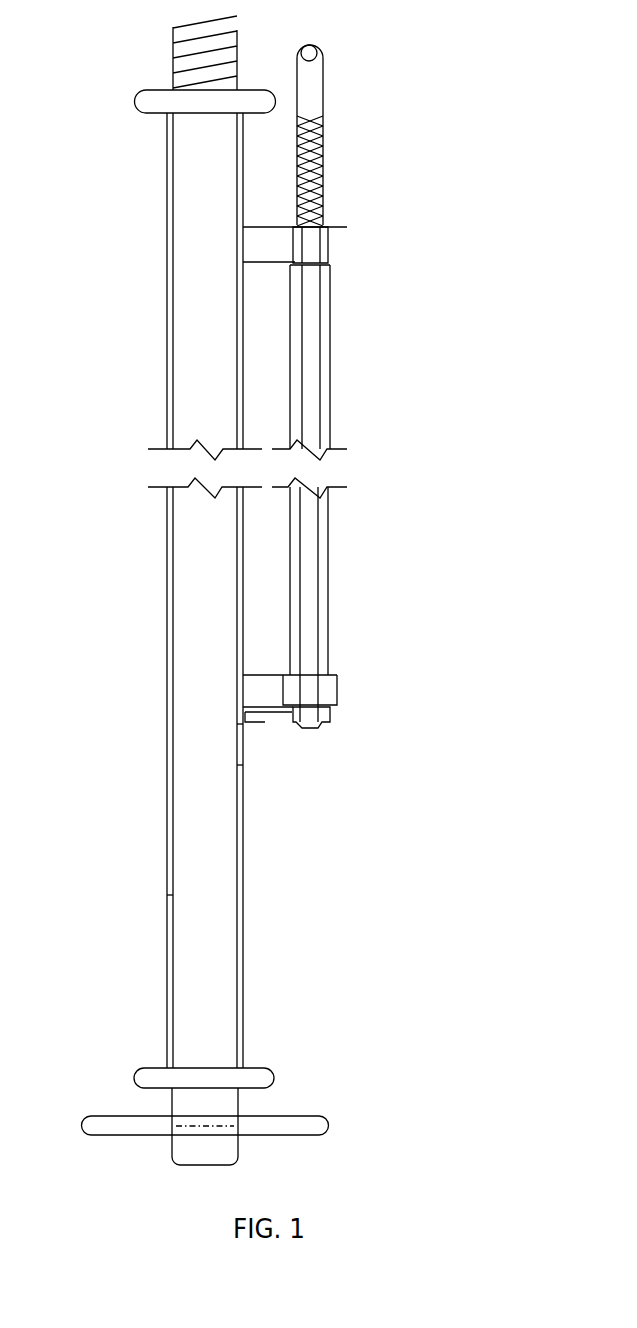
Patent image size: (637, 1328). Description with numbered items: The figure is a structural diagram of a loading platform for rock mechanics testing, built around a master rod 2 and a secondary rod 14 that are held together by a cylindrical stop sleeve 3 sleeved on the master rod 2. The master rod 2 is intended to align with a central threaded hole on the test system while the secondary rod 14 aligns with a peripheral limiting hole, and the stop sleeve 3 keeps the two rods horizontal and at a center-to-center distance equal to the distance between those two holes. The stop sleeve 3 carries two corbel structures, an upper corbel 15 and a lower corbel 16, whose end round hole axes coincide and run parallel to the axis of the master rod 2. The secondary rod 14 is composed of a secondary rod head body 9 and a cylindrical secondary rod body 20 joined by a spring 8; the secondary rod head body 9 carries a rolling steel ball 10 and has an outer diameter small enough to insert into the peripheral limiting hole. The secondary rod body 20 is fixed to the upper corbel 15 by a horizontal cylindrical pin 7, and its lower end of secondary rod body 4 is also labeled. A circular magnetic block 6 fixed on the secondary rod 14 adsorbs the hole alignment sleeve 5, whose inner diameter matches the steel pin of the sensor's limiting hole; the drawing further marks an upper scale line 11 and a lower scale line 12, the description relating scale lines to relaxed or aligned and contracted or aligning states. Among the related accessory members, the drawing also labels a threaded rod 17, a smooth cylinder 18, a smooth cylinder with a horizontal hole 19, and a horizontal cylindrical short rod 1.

The horizontal cylindrical short rod 1 is at (278, 1127).
The master rod 2 is at (205, 1078).
The stop sleeve 3 is at (240, 615).
The lower end of secondary rod body 4 is at (317, 733).
The hole alignment sleeve 5 is at (295, 617).
The circular magnetic block 6 is at (265, 722).
The horizontal cylindrical pin 7 is at (325, 230).
The spring 8 is at (320, 167).
The secondary rod head body 9 is at (310, 88).
The rolling steel ball 10 is at (312, 53).
The upper scale line 11 is at (243, 727).
The lower scale line 12 is at (237, 768).
The secondary rod 14 is at (328, 263).
The upper corbel 15 is at (323, 255).
The lower corbel 16 is at (337, 692).
The threaded rod 17 is at (237, 32).
The smooth cylinder 18 is at (180, 902).
The smooth cylinder with a horizontal hole 19 is at (173, 1152).
The secondary rod body 20 is at (318, 433).